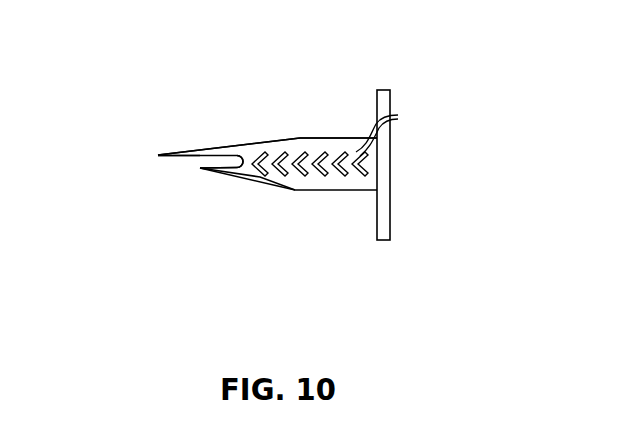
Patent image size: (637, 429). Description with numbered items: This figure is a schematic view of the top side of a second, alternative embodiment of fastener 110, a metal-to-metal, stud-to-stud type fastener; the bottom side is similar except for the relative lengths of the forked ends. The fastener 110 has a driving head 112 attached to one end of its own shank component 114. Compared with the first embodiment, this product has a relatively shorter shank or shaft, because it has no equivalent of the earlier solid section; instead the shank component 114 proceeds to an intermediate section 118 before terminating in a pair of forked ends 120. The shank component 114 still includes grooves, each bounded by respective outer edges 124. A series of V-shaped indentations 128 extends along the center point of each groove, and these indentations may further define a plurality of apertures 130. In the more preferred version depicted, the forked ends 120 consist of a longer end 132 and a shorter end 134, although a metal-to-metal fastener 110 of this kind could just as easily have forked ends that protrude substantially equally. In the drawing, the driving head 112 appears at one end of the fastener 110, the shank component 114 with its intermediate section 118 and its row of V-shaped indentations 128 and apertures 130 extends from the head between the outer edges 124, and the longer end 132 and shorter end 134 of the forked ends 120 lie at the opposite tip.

The fastener 110 is at (284, 96).
The driving head 112 is at (390, 150).
The shank component 114 is at (292, 292).
The intermediate section 118 is at (308, 143).
The forked ends 120 is at (162, 174).
The outer edges 124 is at (276, 140).
The V-shaped indentations 128 is at (391, 130).
The apertures 130 is at (258, 150).
The longer end 132 is at (185, 152).
The shorter end 134 is at (205, 170).